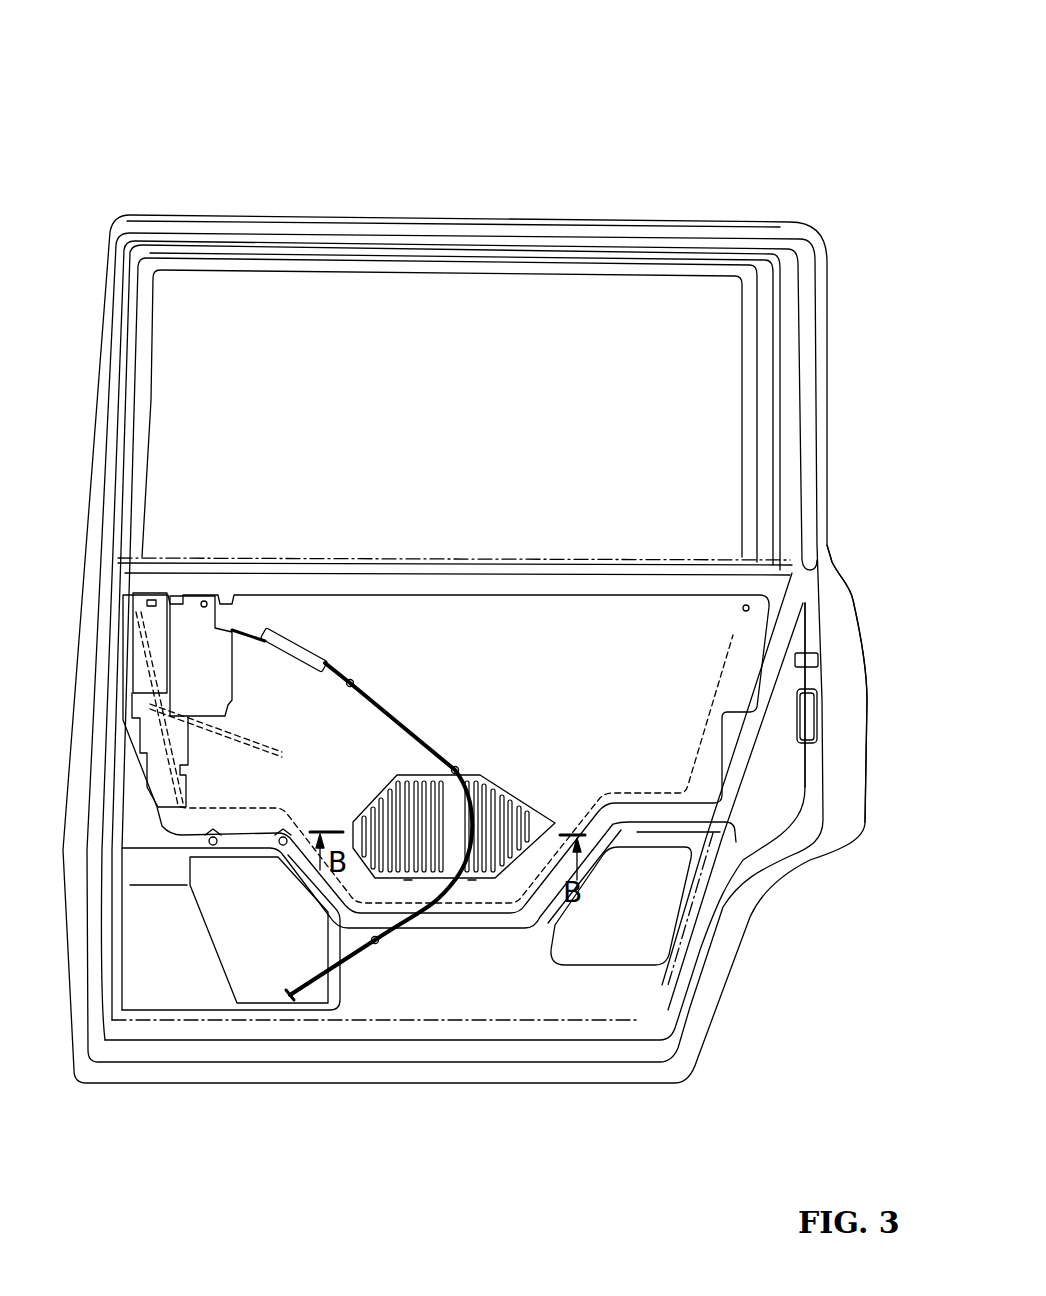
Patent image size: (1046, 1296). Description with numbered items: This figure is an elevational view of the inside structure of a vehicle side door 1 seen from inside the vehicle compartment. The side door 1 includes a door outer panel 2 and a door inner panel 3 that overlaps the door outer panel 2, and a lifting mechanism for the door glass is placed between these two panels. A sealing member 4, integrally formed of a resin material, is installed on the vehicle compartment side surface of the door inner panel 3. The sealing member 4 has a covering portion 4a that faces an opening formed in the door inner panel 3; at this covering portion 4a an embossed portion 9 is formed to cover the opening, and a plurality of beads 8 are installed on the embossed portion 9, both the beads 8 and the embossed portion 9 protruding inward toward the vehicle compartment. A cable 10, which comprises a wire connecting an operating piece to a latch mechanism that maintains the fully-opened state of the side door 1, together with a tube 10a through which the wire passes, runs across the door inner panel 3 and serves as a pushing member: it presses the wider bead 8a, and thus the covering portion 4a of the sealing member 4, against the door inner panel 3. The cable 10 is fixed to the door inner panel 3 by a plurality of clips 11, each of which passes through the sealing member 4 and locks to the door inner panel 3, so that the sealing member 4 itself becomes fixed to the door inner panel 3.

The side door 1 is at (782, 118).
The door outer panel 2 is at (868, 691).
The door inner panel 3 is at (805, 788).
The sealing member 4 is at (703, 806).
The covering portion 4a is at (483, 795).
The beads 8 is at (410, 882).
The wider bead 8a is at (472, 882).
The embossed portion 9 is at (505, 787).
The cable 10 is at (403, 712).
The tube 10a is at (378, 693).
The clips 11 is at (350, 686).